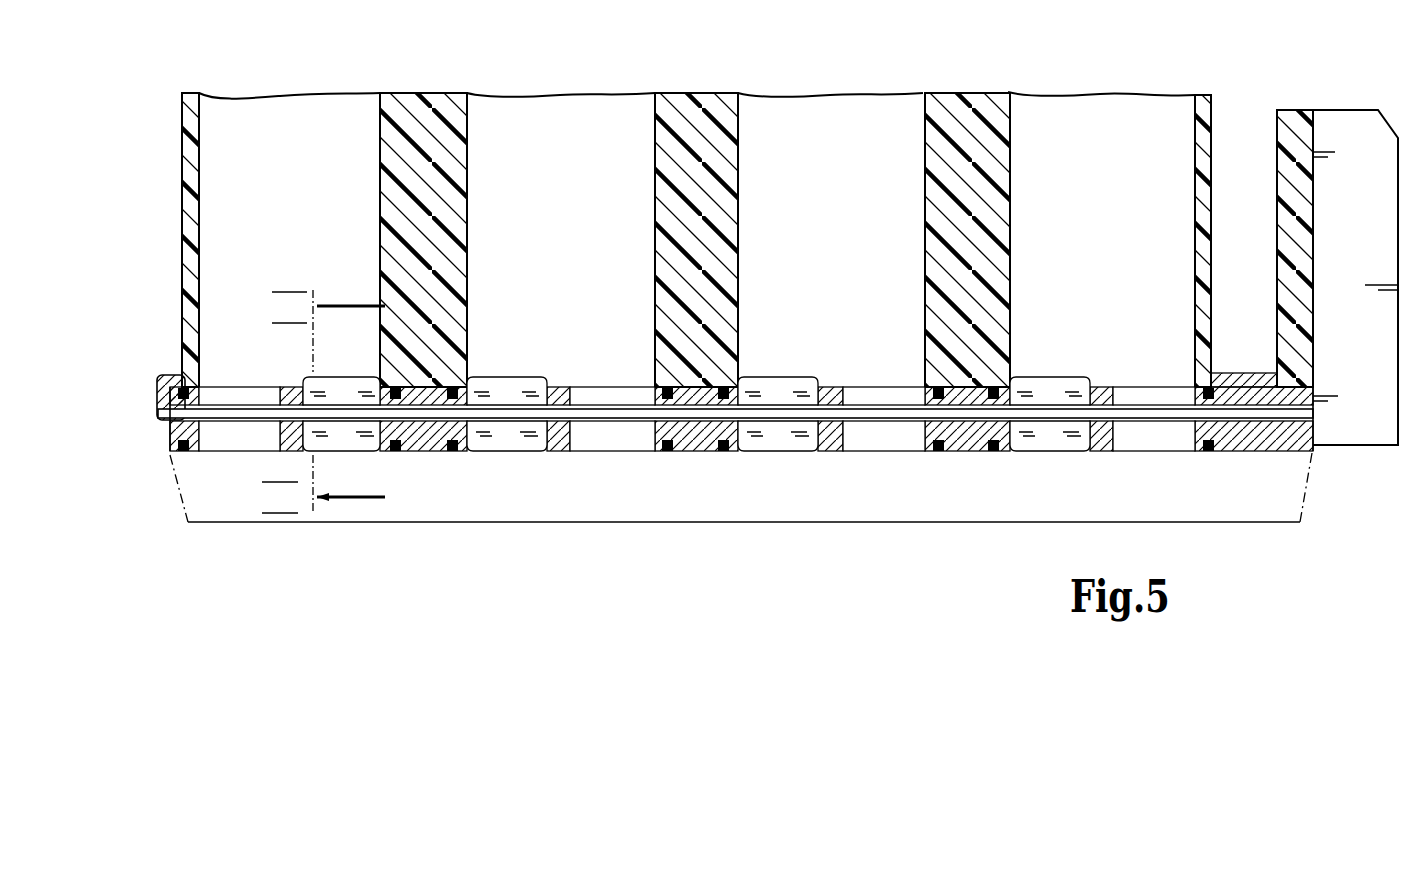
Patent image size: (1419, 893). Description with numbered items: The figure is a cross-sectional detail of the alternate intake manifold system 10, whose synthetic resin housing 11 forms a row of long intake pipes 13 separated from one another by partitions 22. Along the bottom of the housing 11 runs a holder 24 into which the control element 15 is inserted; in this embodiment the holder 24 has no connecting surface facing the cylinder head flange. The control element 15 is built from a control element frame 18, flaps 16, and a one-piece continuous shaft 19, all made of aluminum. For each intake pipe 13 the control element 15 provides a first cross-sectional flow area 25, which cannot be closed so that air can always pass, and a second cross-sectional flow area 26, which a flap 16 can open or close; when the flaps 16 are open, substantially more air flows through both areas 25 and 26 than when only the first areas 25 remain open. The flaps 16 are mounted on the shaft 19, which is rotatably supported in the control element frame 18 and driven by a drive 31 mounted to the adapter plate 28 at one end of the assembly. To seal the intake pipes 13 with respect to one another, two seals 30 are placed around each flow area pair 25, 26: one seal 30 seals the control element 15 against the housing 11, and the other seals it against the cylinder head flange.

The intake manifold system 10 is at (302, 542).
The synthetic resin housing 11 is at (180, 178).
The long intake pipes 13 is at (300, 113).
The control element 15 is at (742, 524).
The flaps 16 is at (358, 385).
The control element frame 18 is at (968, 430).
The shaft 19 is at (602, 419).
The partitions 22 is at (426, 110).
The holder 24 is at (158, 385).
The first cross-sectional flow area 25 is at (881, 430).
The second cross-sectional flow area 26 is at (779, 448).
The adapter plate 28 is at (1296, 120).
The seals 30 is at (654, 394).
The drive 31 is at (1348, 125).